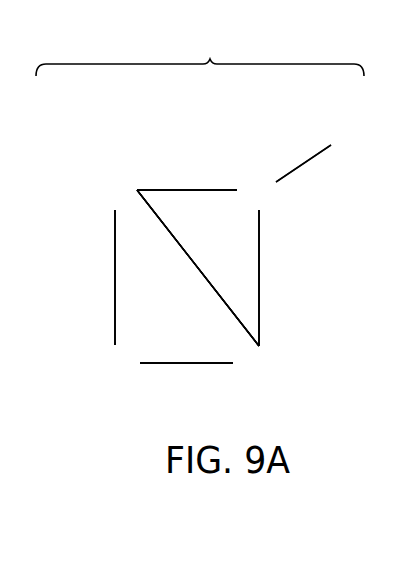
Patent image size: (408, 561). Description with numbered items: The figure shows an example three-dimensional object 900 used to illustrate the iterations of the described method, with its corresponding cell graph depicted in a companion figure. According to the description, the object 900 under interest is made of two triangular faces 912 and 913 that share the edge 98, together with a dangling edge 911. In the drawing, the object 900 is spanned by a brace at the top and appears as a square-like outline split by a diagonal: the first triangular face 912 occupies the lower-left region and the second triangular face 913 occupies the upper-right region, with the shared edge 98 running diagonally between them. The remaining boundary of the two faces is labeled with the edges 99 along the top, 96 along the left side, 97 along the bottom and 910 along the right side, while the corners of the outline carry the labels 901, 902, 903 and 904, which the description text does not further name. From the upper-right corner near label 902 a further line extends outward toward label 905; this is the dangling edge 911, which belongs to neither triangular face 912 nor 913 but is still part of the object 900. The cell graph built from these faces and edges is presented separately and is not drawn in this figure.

The object 900 is at (200, 184).
The vertex 901 is at (118, 191).
The vertex 902 is at (254, 192).
The vertex 903 is at (115, 360).
The vertex 904 is at (256, 360).
The edge 905 is at (321, 152).
The edge 96 is at (115, 272).
The edge 97 is at (192, 365).
The edge 98 is at (188, 258).
The edge 99 is at (186, 189).
The edge 910 is at (260, 272).
The dangling edge 911 is at (293, 169).
The triangular face 912 is at (185, 328).
The triangular face 913 is at (240, 256).